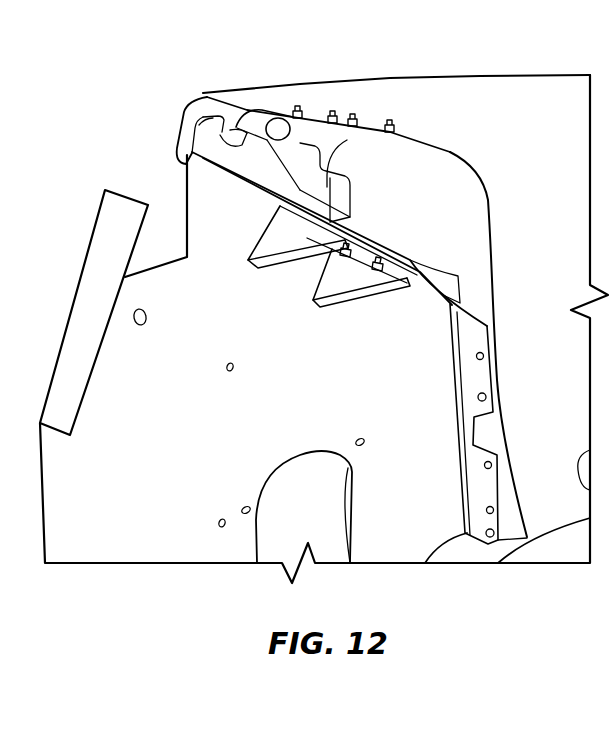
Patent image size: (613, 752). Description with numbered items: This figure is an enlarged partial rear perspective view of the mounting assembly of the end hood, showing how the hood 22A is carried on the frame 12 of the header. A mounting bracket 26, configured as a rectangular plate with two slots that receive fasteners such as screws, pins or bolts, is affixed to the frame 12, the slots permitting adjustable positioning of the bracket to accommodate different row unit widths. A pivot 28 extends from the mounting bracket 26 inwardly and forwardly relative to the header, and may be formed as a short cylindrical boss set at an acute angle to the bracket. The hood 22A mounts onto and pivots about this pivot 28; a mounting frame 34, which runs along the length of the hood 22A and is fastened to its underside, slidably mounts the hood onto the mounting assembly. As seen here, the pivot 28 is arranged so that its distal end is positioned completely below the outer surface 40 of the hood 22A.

The frame 12 is at (67, 318).
The hood 22A is at (491, 75).
The mounting bracket 26 is at (415, 265).
The pivot 28 is at (278, 122).
The mounting frame 34 is at (210, 136).
The outer surface 40 is at (373, 80).